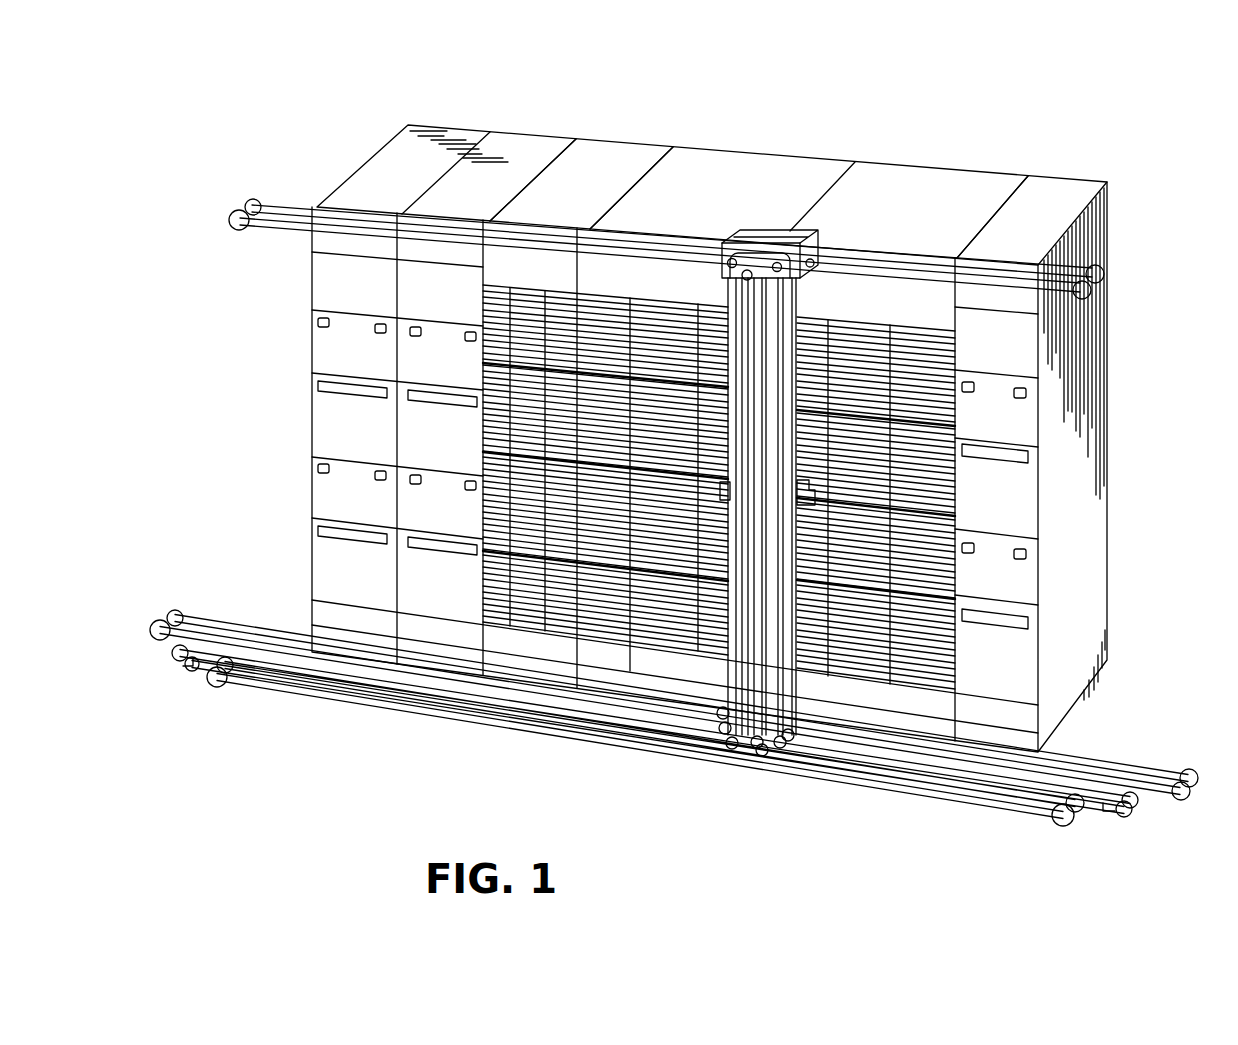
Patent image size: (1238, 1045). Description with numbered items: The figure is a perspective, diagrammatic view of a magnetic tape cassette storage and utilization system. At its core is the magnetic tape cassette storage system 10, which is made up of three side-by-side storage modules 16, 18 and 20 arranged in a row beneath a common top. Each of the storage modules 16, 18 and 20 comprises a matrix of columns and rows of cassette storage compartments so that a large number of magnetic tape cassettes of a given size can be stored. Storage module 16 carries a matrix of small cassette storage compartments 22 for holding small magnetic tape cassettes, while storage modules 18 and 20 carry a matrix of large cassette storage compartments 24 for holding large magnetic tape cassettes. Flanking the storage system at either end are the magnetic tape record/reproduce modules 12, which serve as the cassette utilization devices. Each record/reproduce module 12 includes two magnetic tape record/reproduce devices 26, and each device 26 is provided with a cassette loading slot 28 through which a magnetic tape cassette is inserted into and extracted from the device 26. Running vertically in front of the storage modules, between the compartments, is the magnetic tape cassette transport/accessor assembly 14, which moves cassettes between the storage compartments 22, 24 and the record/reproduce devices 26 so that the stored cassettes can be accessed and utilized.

The magnetic tape cassette storage system 10 is at (746, 148).
The magnetic tape record/reproduce module 12 is at (521, 128).
The magnetic tape cassette transport/accessor assembly 14 is at (802, 233).
The storage module 16 is at (604, 150).
The storage module 18 is at (788, 167).
The storage module 20 is at (940, 172).
The small cassette storage compartment 22 is at (524, 626).
The large cassette storage compartment 24 is at (655, 636).
The magnetic tape record/reproduce device 26 is at (316, 432).
The cassette loading slot 28 is at (318, 382).